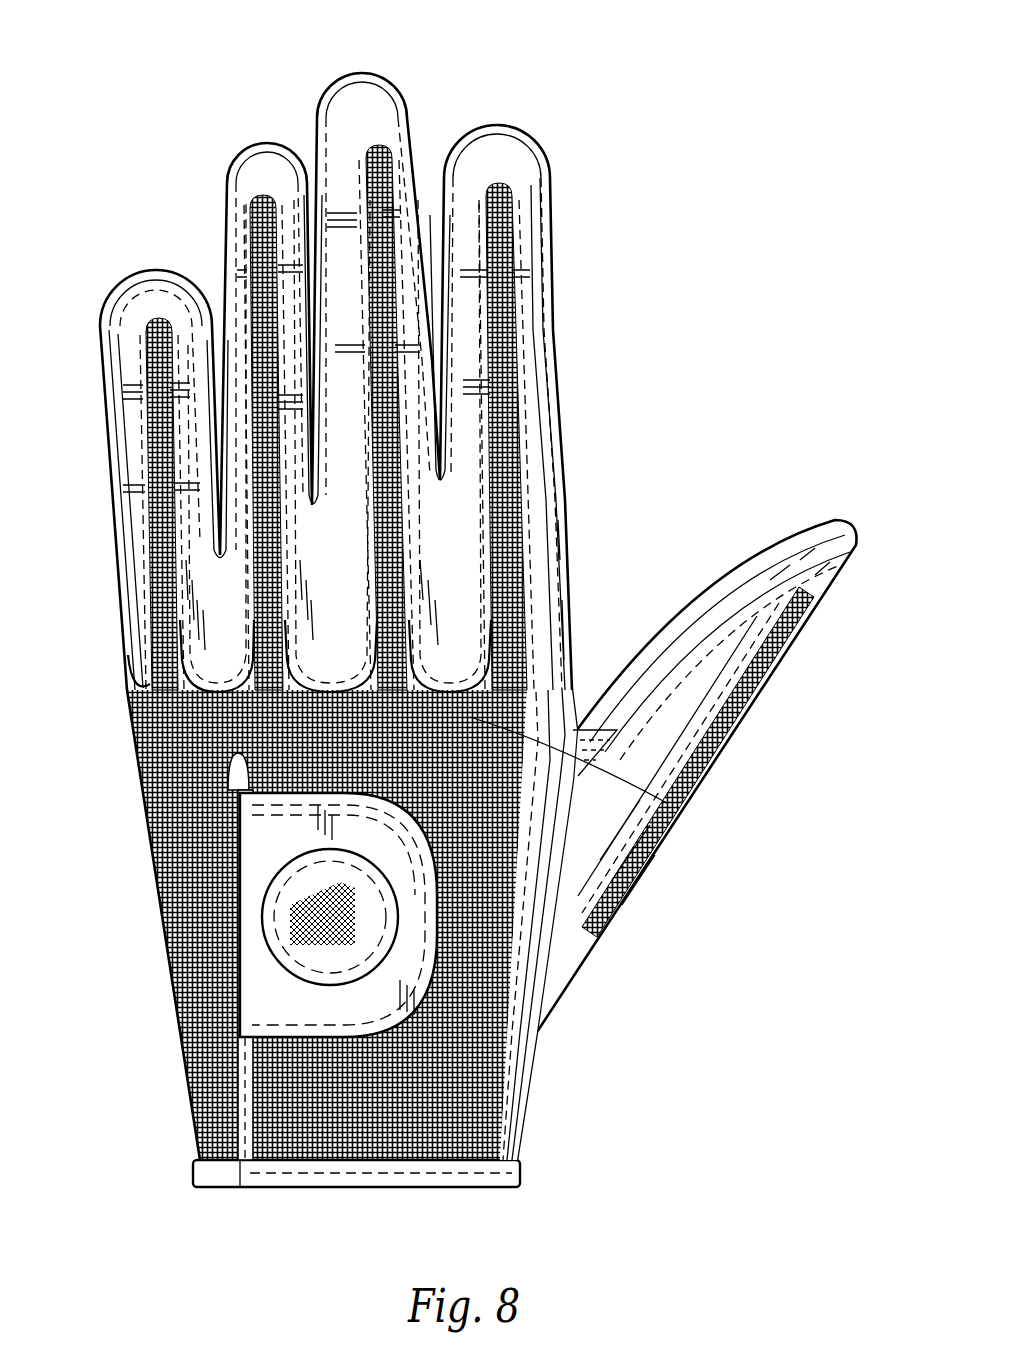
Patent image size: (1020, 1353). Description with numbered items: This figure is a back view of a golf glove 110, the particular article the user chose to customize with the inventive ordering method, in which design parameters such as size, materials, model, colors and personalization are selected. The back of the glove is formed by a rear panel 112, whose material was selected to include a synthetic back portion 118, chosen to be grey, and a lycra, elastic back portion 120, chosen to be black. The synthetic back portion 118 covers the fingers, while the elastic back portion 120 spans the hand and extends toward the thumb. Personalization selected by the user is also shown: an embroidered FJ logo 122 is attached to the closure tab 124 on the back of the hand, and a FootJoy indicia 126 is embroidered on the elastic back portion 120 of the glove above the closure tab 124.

The golf glove 110 is at (705, 180).
The rear panel 112 is at (565, 455).
The synthetic back portion 118 is at (168, 292).
The elastic back portion 120 is at (163, 738).
The FJ logo 122 is at (303, 887).
The closure tab 124 is at (266, 840).
The FootJoy indicia 126 is at (697, 817).